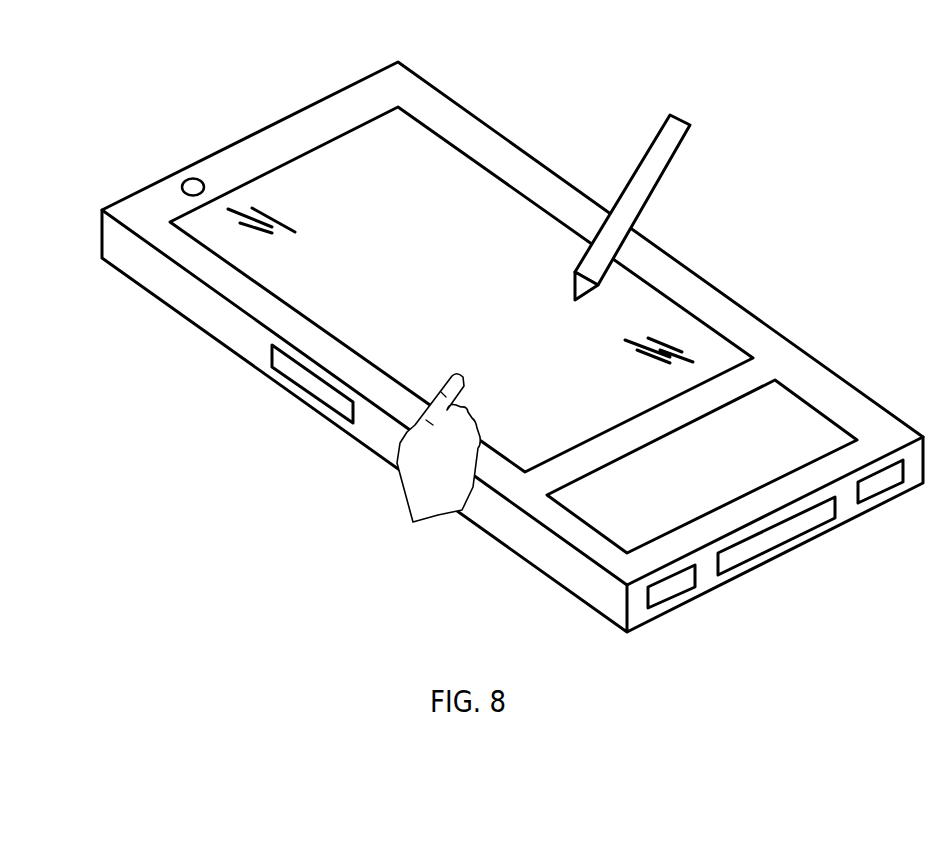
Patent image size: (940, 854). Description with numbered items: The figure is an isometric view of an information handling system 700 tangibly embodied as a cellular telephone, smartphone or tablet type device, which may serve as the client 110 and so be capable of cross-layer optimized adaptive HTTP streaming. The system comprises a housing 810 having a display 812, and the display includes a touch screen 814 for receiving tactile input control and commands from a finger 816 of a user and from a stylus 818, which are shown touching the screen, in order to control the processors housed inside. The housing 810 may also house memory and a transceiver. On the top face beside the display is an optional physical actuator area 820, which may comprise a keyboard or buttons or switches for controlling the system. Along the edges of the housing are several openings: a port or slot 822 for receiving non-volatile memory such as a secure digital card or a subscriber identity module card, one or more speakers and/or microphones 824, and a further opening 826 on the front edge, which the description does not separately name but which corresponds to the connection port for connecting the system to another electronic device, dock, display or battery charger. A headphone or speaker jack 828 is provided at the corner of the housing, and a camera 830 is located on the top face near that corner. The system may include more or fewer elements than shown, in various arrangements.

The client 110 is at (530, 86).
The information handling system 700 is at (501, 345).
The housing 810 is at (343, 87).
The display 812 is at (398, 167).
The touch screen 814 is at (489, 294).
The finger 816 is at (452, 375).
The stylus 818 is at (650, 145).
The physical actuator area 820 is at (787, 427).
The port or slot 822 is at (283, 382).
The speakers and/or microphones 824 is at (677, 597).
The port 826 is at (790, 540).
The headphone or speaker jack 828 is at (122, 193).
The camera 830 is at (190, 179).